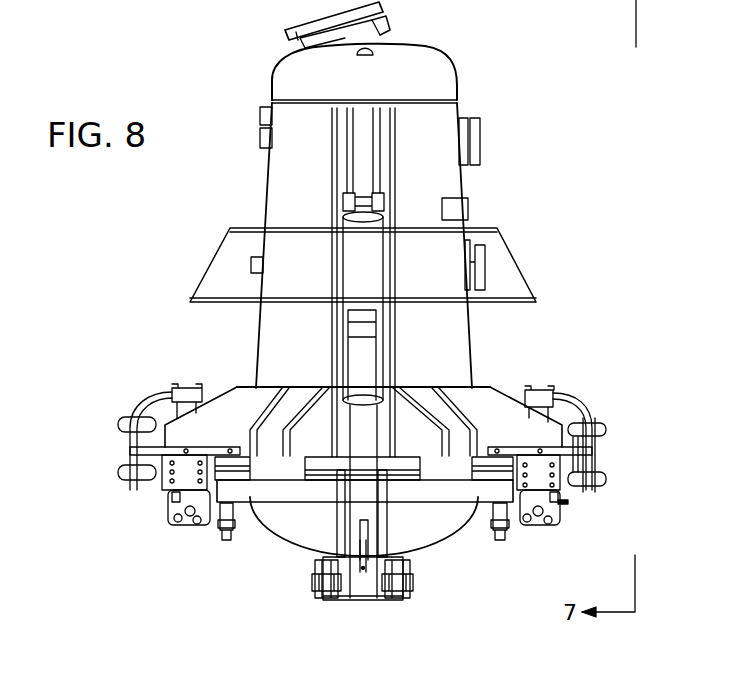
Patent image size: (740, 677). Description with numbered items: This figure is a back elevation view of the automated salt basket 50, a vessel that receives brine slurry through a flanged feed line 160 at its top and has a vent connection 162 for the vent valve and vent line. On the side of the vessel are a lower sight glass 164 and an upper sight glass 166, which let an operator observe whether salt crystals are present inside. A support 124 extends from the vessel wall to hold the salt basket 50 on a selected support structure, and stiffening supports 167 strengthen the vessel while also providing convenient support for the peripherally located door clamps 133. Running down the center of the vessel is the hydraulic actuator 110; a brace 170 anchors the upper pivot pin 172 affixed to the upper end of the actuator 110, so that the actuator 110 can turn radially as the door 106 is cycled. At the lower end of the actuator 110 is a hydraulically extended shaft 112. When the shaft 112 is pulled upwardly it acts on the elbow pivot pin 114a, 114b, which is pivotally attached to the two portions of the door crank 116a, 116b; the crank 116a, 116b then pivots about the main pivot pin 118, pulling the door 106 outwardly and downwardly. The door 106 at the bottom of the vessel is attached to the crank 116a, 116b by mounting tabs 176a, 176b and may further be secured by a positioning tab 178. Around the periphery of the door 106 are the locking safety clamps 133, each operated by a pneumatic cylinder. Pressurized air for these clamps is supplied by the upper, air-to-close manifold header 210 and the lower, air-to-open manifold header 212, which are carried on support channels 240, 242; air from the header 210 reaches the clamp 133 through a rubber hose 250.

The salt basket 50 is at (512, 114).
The door 106 is at (278, 530).
The actuator 110 is at (358, 254).
The hydraulically extended shaft 112 is at (358, 428).
The elbow pivot pin 114a is at (318, 582).
The elbow pivot pin 114b is at (414, 590).
The door crank 116a is at (340, 524).
The door crank 116b is at (386, 532).
The main pivot pin 118 is at (388, 494).
The support 124 is at (520, 289).
The door clamp 133 is at (184, 399).
The flanged feed line 160 is at (314, 44).
The vent connection 162 is at (392, 21).
The lower sight glass 164 is at (481, 263).
The upper sight glass 166 is at (479, 150).
The stiffening support 167 is at (232, 400).
The brace 170 is at (382, 156).
The upper pivot pin 172 is at (344, 196).
The mounting tab 176a is at (316, 578).
The mounting tab 176b is at (410, 580).
The positioning tab 178 is at (362, 570).
The upper manifold header 210 is at (607, 430).
The lower manifold header 212 is at (602, 479).
The support channel 240 is at (576, 458).
The support channel 242 is at (596, 441).
The rubber hose 250 is at (592, 404).